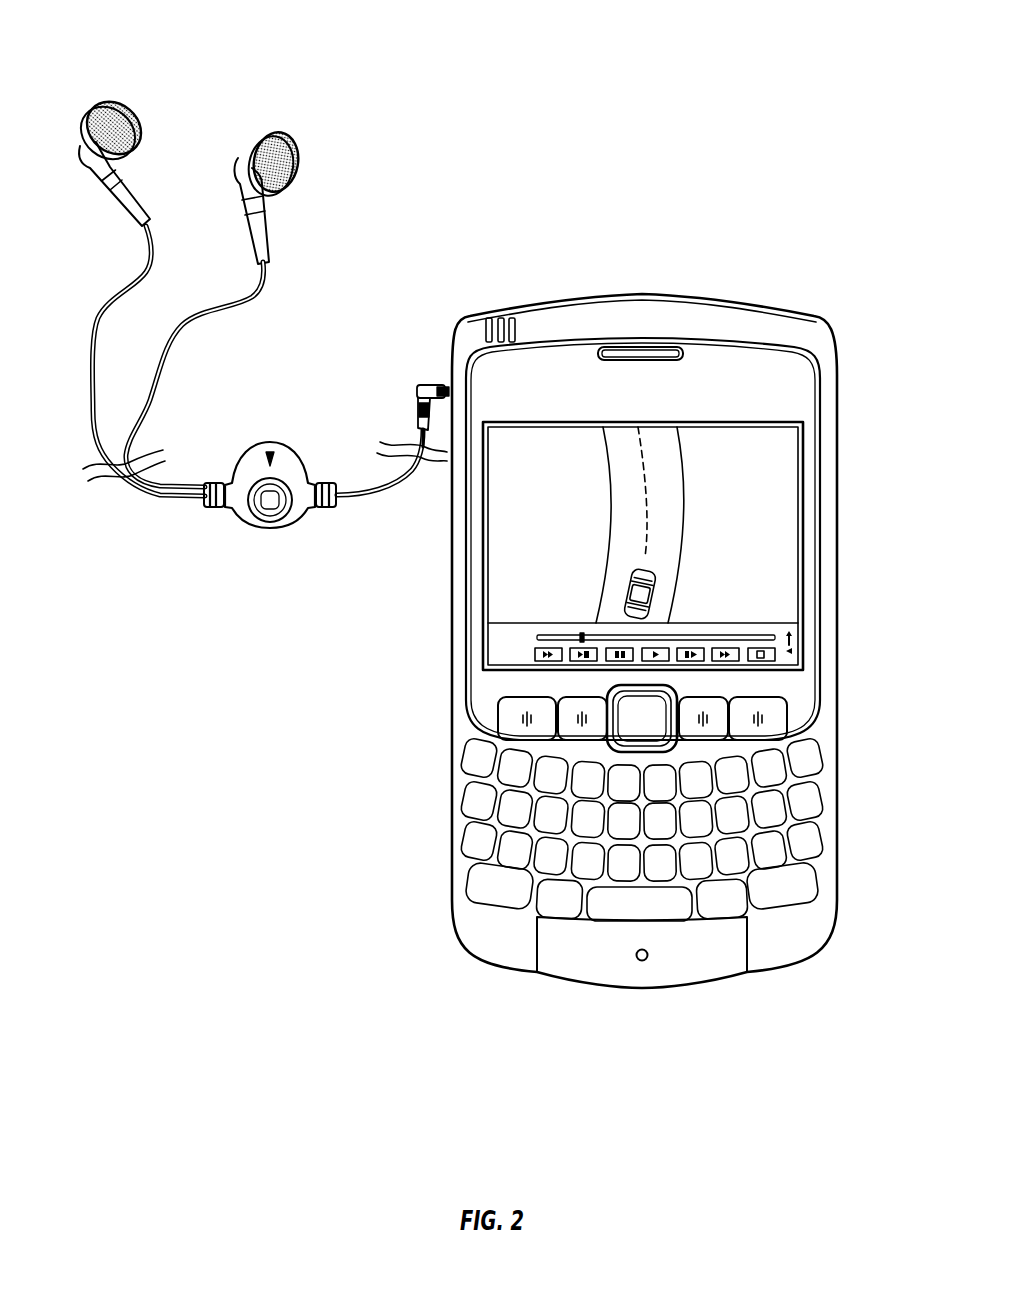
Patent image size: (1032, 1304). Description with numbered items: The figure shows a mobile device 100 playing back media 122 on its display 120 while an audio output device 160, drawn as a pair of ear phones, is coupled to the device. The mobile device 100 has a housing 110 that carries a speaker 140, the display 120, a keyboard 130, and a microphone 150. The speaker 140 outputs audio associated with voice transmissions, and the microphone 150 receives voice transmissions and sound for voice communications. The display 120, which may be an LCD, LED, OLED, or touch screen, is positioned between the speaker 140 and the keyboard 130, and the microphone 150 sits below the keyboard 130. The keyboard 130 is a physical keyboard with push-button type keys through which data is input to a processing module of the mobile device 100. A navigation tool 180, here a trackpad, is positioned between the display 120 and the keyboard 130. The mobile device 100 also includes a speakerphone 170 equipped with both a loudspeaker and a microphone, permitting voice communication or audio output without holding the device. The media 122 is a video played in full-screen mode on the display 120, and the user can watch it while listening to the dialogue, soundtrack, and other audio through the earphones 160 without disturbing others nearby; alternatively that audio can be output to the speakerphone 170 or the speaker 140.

The mobile device 100 is at (553, 64).
The housing 110 is at (457, 530).
The display 120 is at (502, 582).
The media 122 is at (776, 468).
The keyboard 130 is at (817, 798).
The speaker 140 is at (640, 352).
The microphone 150 is at (647, 957).
The audio output device 160 is at (143, 267).
The speakerphone 170 is at (478, 322).
The navigation tool 180 is at (652, 703).